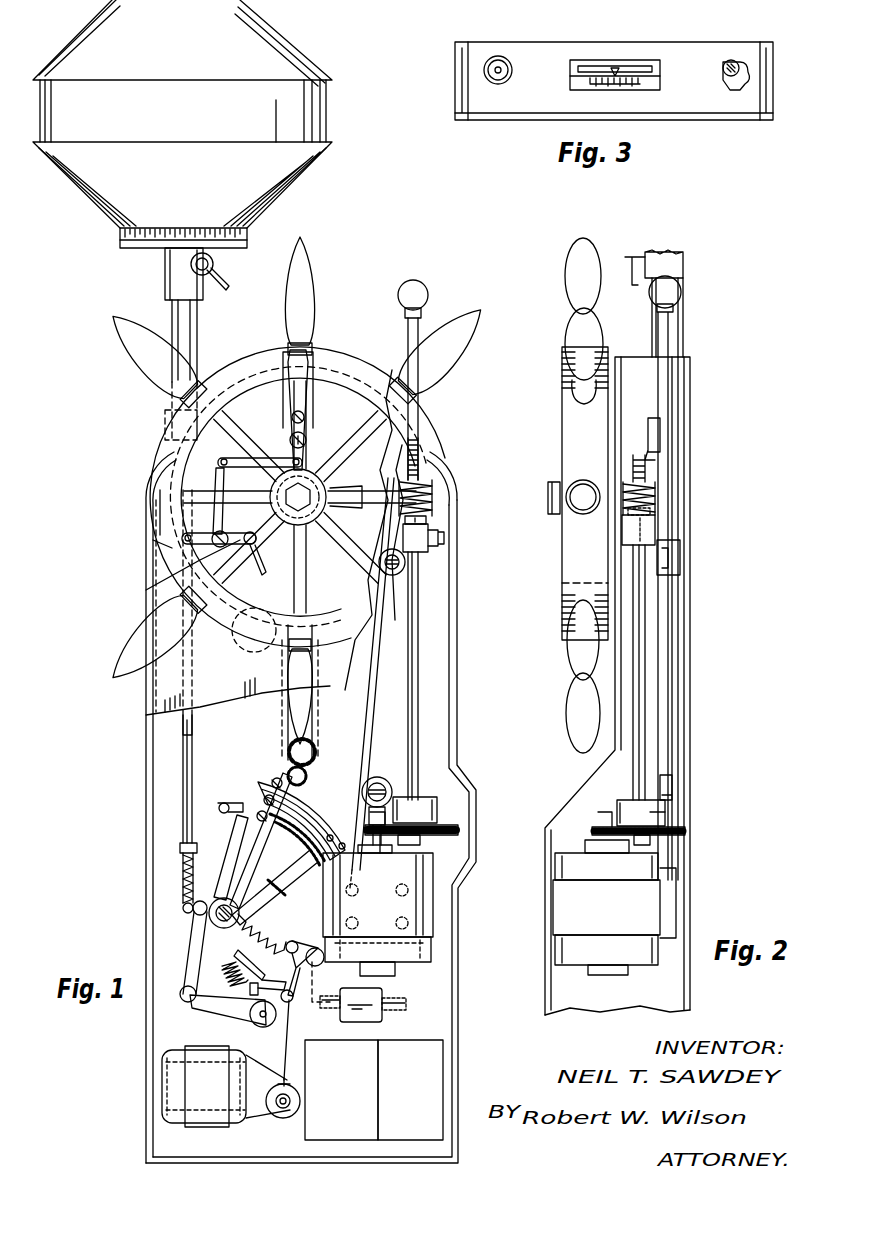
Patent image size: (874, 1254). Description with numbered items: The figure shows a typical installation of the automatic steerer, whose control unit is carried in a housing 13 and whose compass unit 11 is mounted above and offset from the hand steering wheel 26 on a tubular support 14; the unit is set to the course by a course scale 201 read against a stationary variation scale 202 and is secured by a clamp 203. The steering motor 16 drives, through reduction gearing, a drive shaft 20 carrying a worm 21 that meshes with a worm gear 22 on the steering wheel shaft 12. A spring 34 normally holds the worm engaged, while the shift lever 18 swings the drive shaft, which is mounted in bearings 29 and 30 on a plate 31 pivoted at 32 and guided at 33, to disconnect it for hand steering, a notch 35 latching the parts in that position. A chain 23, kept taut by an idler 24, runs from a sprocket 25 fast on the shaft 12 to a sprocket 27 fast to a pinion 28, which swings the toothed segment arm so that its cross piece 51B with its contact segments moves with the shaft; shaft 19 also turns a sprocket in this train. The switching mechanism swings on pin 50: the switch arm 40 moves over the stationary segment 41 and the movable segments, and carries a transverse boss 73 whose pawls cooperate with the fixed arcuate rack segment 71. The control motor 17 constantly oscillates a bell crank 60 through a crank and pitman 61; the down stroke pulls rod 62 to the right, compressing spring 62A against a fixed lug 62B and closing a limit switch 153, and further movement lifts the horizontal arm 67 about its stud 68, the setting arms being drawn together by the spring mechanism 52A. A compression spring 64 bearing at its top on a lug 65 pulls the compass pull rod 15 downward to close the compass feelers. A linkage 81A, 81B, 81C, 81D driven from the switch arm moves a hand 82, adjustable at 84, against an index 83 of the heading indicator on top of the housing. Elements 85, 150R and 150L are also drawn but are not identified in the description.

In FIG. 1, the compass unit 11 is at (300, 158).
In FIG. 1, the course scale 201 is at (120, 236).
In FIG. 1, the variation scale 202 is at (168, 250).
In FIG. 1, the clamp 203 is at (228, 287).
In FIG. 1, the tubular support 14 is at (183, 323).
In FIG. 2, the tubular support 14 is at (683, 344).
In FIG. 3, the tubular support 14 is at (499, 56).
In FIG. 1, the hand 82 is at (284, 360).
In FIG. 3, the hand 82 is at (615, 66).
In FIG. 1, the hand steering wheel 26 is at (348, 368).
In FIG. 2, the hand steering wheel 26 is at (565, 412).
In FIG. 1, the shift lever 18 is at (413, 282).
In FIG. 2, the shift lever 18 is at (669, 326).
In FIG. 3, the shift lever 18 is at (733, 58).
In FIG. 1, the hand adjustment 84 is at (291, 414).
In FIG. 1, the linkage member 81D is at (289, 438).
In FIG. 1, the linkage member 81C is at (258, 455).
In FIG. 1, the sprocket 25 is at (322, 445).
In FIG. 1, the worm gear 22 is at (420, 448).
In FIG. 2, the worm gear 22 is at (650, 466).
In FIG. 1, the worm 21 is at (434, 484).
In FIG. 2, the worm 21 is at (657, 494).
In FIG. 1, the compass pull rod 15 is at (160, 488).
In FIG. 3, the compass pull rod 15 is at (508, 70).
In FIG. 1, the steering wheel shaft 12 is at (304, 494).
In FIG. 2, the steering wheel shaft 12 is at (548, 488).
In FIG. 1, the spring 34 is at (440, 532).
In FIG. 1, the bearing 29 is at (430, 548).
In FIG. 2, the bearing 29 is at (622, 535).
In FIG. 1, the linkage member 81B is at (216, 518).
In FIG. 1, the lug 85 is at (262, 574).
In FIG. 1, the guide 33 is at (391, 575).
In FIG. 2, the guide 33 is at (666, 576).
In FIG. 1, the drive shaft 20 is at (420, 638).
In FIG. 2, the drive shaft 20 is at (645, 680).
In FIG. 1, the idler 24 is at (246, 648).
In FIG. 1, the plate 31 is at (370, 686).
In FIG. 2, the plate 31 is at (680, 712).
In FIG. 1, the housing 13 is at (158, 690).
In FIG. 2, the housing 13 is at (693, 602).
In FIG. 3, the housing 13 is at (545, 52).
In FIG. 1, the linkage member 81A is at (192, 714).
In FIG. 1, the chain 23 is at (283, 698).
In FIG. 1, the sprocket 27 is at (312, 745).
In FIG. 1, the pinion 28 is at (288, 772).
In FIG. 1, the cross piece 51B is at (256, 786).
In FIG. 1, the pivot 32 is at (378, 778).
In FIG. 2, the pivot 32 is at (662, 784).
In FIG. 1, the bearing 30 is at (438, 800).
In FIG. 2, the bearing 30 is at (624, 800).
In FIG. 1, the stationary segment 41 is at (218, 805).
In FIG. 1, the lug 65 is at (182, 848).
In FIG. 1, the arcuate rack segment 71 is at (235, 838).
In FIG. 1, the switch arm 40 is at (238, 860).
In FIG. 1, the compression spring 64 is at (182, 878).
In FIG. 1, the transverse boss 73 is at (288, 878).
In FIG. 1, the shaft 19 is at (460, 829).
In FIG. 2, the shaft 19 is at (592, 830).
In FIG. 1, the pin 50 is at (208, 913).
In FIG. 1, the steering motor 16 is at (378, 914).
In FIG. 2, the steering motor 16 is at (614, 907).
In FIG. 1, the connecting rod with compression spring 52A is at (286, 930).
In FIG. 1, the bell crank 60 is at (297, 944).
In FIG. 1, the spring 62A is at (258, 968).
In FIG. 1, the rod 62 is at (286, 990).
In FIG. 1, the fixed lug 62B is at (251, 988).
In FIG. 1, the horizontal arm 67 is at (210, 1010).
In FIG. 1, the stud 68 is at (264, 1028).
In FIG. 1, the limit switch 153 is at (374, 1018).
In FIG. 1, the control motor 17 is at (205, 1115).
In FIG. 1, the crank and pitman 61 is at (283, 1118).
In FIG. 1, the right contact 150R is at (341, 1090).
In FIG. 1, the left contact 150L is at (410, 1090).
In FIG. 2, the notch 35 is at (650, 440).
In FIG. 3, the notch 35 is at (750, 86).
In FIG. 3, the index 83 is at (632, 90).